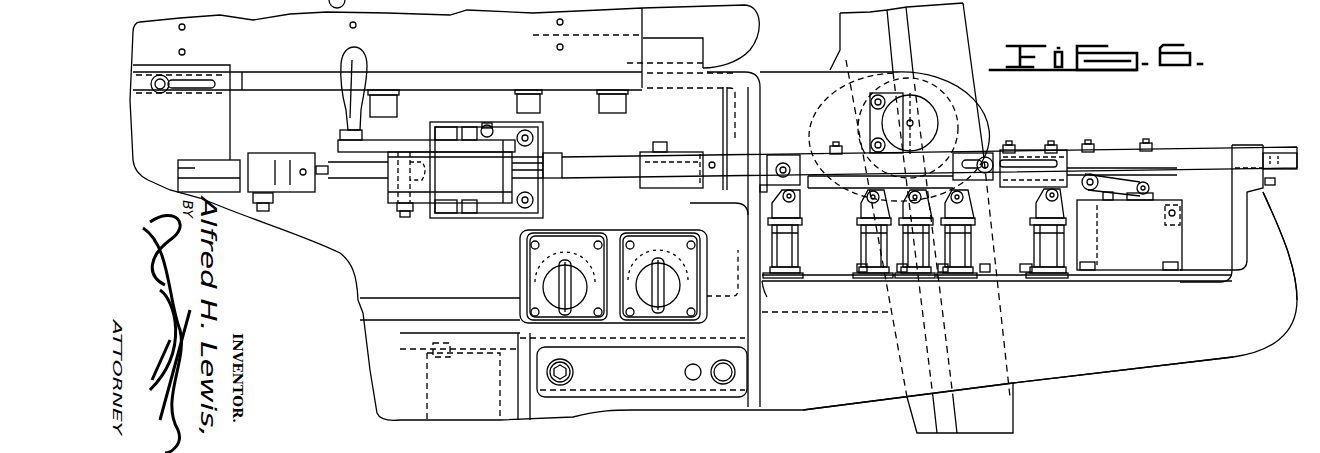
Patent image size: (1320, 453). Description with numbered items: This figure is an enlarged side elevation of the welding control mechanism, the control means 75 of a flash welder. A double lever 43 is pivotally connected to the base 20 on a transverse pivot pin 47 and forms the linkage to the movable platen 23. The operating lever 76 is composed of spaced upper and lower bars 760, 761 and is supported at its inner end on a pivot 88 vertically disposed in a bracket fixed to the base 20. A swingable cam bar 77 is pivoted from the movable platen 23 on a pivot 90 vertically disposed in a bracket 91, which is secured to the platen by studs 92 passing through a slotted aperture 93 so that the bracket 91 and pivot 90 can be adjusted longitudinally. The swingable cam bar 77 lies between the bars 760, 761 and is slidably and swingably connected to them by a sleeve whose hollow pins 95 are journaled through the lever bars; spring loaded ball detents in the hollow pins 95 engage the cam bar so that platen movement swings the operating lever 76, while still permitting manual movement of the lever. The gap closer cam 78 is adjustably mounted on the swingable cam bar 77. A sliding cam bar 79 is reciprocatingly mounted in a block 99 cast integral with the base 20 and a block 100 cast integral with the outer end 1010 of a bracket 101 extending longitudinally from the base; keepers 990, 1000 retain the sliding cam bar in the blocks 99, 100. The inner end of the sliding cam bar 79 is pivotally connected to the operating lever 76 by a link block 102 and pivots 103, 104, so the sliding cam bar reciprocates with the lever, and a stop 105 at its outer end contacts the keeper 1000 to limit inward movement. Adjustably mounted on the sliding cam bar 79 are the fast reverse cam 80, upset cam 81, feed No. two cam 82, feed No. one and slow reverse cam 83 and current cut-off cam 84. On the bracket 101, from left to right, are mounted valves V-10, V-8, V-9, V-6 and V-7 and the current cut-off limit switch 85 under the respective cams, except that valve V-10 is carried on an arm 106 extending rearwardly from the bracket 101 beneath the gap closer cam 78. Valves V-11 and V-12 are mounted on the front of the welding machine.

The base 20 is at (378, 400).
The movable platen 23 is at (255, 22).
The double lever 43 is at (962, 16).
The transverse pivot pin 47 is at (925, 121).
The control means 75 is at (1004, 130).
The operating lever 76 is at (340, 104).
The upper bar 760 is at (338, 145).
The lower bar 761 is at (420, 205).
The swingable cam bar 77 is at (599, 160).
The gap closer cam 78 is at (703, 152).
The sliding cam bar 79 is at (590, 170).
The fast reverse cam 80 is at (790, 155).
The upset cam 81 is at (833, 186).
The feed No. 2 cam 82 is at (856, 190).
The feed No. 1 and slow reverse cam 83 is at (996, 182).
The current cut-off cam 84 is at (1242, 178).
The current cut-off limit switch 85 is at (1140, 279).
The pivot 88 is at (515, 206).
The pivot 90 is at (265, 150).
The bracket 91 is at (178, 180).
The studs 92 is at (166, 78).
The slotted aperture 93 is at (185, 90).
The hollow pins 95 is at (465, 112).
The block 99 is at (727, 177).
The keeper 990 is at (730, 150).
The block 100 is at (1230, 196).
The keeper 1000 is at (1233, 148).
The outer end 1010 is at (1275, 215).
The bracket 101 is at (1076, 377).
The link block 102 is at (470, 220).
The pivot 103 is at (412, 128).
The pivot 104 is at (476, 126).
The stop 105 is at (1276, 152).
The arm 106 is at (785, 300).
The control valve V-6 is at (959, 279).
The control valve V-7 is at (1048, 279).
The control valve V-8 is at (873, 279).
The control valve V-9 is at (916, 279).
The control valve V-10 is at (790, 278).
The control valve V-11 is at (531, 279).
The control valve V-12 is at (690, 273).